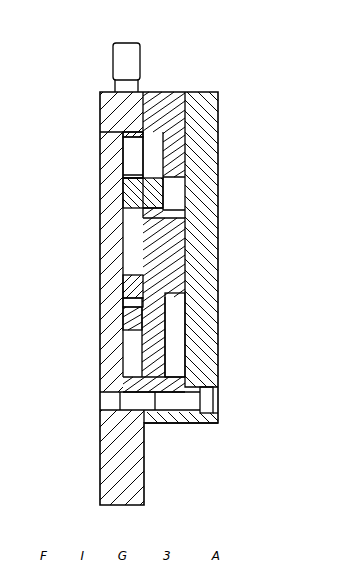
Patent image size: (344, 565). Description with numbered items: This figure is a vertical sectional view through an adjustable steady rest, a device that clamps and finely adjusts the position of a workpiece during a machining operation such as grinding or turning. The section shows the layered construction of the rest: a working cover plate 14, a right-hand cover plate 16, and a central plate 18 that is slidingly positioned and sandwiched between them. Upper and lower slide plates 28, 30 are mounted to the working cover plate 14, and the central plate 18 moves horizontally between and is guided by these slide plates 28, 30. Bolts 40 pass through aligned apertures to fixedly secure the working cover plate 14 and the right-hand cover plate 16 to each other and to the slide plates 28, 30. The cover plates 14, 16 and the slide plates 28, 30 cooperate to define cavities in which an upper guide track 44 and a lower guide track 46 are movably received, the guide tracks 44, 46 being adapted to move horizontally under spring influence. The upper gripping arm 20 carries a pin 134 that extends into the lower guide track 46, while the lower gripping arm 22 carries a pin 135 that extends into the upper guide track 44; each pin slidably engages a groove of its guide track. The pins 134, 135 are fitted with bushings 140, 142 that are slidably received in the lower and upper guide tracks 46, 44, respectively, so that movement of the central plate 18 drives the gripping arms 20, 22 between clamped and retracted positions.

The working cover plate 14 is at (97, 87).
The right-hand cover plate 16 is at (219, 89).
The central plate 18 is at (139, 252).
The upper gripping arm 20 is at (189, 345).
The lower gripping arm 22 is at (131, 162).
The upper slide plate 28 is at (165, 91).
The lower slide plate 30 is at (175, 427).
The bolts 40 is at (216, 411).
The upper guide track 44 is at (138, 131).
The lower guide track 46 is at (123, 287).
The pin 134 is at (123, 327).
The pin 135 is at (122, 201).
The bushing 140 is at (125, 174).
The bushing 142 is at (123, 301).